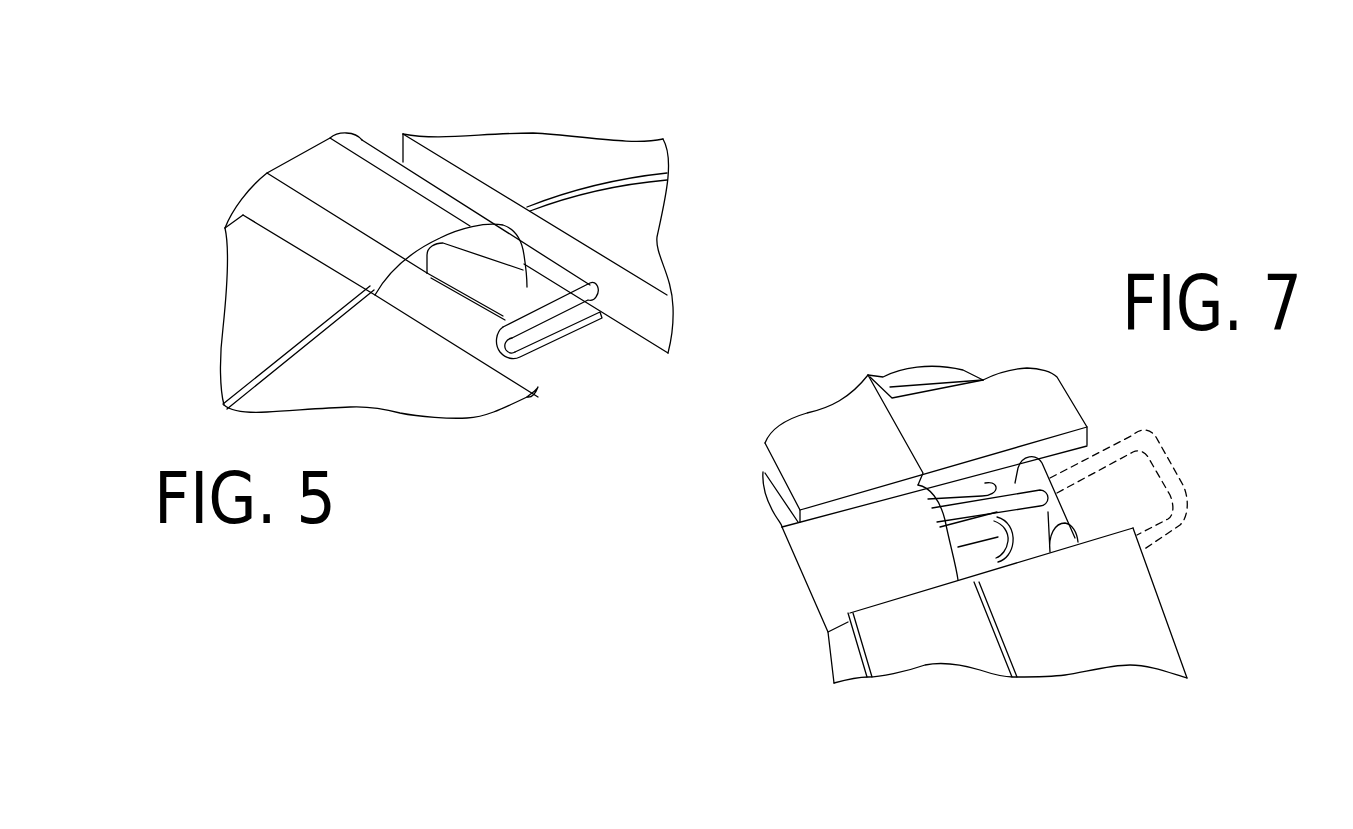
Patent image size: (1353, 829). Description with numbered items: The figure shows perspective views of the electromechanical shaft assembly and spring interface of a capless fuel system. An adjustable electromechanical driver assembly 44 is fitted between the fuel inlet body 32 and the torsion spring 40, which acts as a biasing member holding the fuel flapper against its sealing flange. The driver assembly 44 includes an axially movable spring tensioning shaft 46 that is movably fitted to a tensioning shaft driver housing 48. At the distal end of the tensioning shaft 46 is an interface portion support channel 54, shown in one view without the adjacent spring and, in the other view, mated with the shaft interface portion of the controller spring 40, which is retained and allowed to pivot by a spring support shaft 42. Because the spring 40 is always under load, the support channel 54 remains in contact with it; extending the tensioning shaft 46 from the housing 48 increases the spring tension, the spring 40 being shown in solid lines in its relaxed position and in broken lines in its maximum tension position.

In FIG. 5, the fuel inlet body 32 is at (583, 172).
In FIG. 7, the torsion spring 40 is at (1173, 472).
In FIG. 7, the spring support shaft 42 is at (970, 557).
In FIG. 5, the adjustable electromechanical driver assembly 44 is at (347, 180).
In FIG. 7, the adjustable electromechanical driver assembly 44 is at (873, 577).
In FIG. 5, the axially movable spring tensioning shaft 46 is at (487, 285).
In FIG. 7, the axially movable spring tensioning shaft 46 is at (990, 515).
In FIG. 5, the tensioning shaft driver housing 48 is at (300, 173).
In FIG. 7, the tensioning shaft driver housing 48 is at (825, 558).
In FIG. 5, the interface portion support channel 54 is at (526, 340).
In FIG. 7, the interface portion support channel 54 is at (1050, 555).